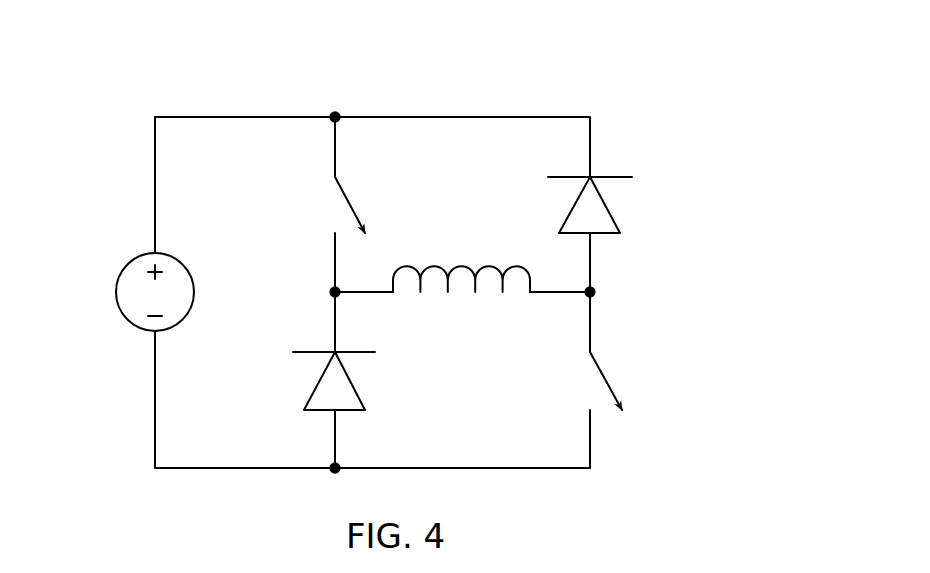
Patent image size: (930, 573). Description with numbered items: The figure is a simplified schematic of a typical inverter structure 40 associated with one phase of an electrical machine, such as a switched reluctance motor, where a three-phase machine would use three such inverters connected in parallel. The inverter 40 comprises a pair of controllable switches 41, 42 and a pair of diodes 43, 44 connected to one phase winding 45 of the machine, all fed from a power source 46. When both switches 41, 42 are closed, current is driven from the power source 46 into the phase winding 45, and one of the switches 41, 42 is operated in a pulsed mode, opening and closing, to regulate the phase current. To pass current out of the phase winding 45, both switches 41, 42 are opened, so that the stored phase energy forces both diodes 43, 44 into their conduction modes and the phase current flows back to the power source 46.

The inverter structure 40 is at (384, 68).
The controllable switch 41 is at (353, 204).
The controllable switch 42 is at (602, 370).
The diode 43 is at (310, 393).
The diode 44 is at (607, 205).
The phase winding 45 is at (463, 280).
The power source 46 is at (133, 255).